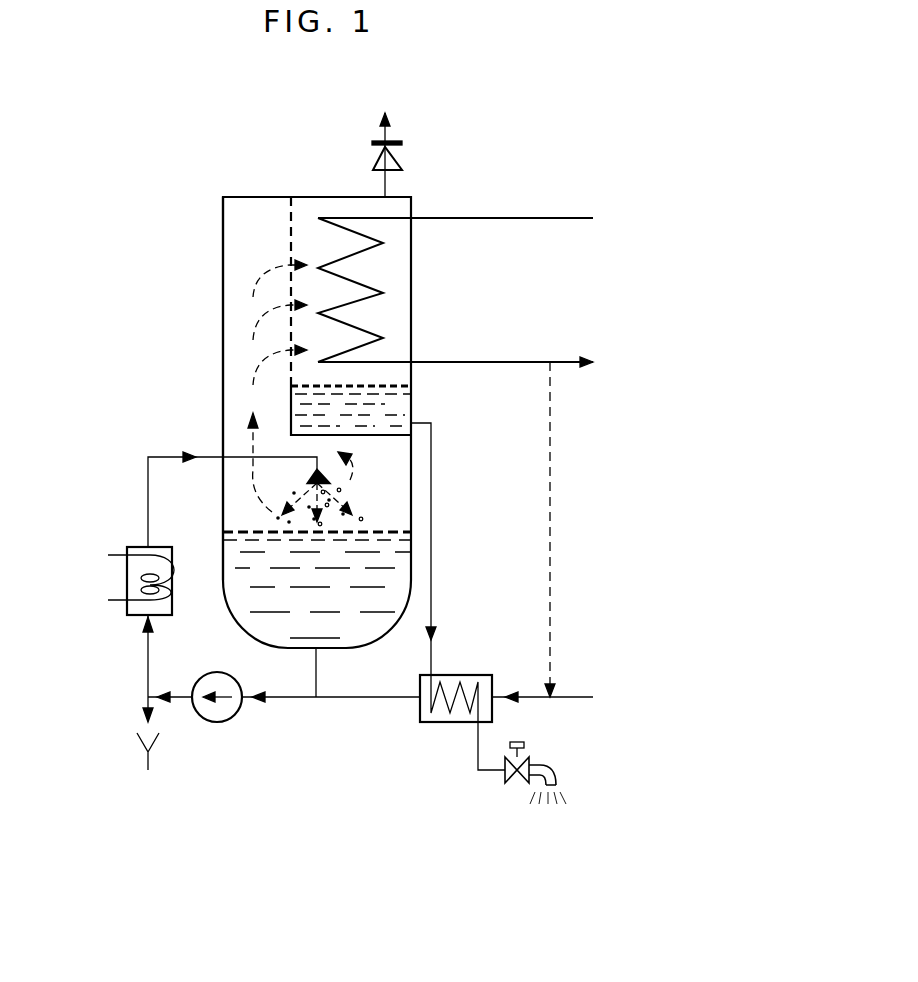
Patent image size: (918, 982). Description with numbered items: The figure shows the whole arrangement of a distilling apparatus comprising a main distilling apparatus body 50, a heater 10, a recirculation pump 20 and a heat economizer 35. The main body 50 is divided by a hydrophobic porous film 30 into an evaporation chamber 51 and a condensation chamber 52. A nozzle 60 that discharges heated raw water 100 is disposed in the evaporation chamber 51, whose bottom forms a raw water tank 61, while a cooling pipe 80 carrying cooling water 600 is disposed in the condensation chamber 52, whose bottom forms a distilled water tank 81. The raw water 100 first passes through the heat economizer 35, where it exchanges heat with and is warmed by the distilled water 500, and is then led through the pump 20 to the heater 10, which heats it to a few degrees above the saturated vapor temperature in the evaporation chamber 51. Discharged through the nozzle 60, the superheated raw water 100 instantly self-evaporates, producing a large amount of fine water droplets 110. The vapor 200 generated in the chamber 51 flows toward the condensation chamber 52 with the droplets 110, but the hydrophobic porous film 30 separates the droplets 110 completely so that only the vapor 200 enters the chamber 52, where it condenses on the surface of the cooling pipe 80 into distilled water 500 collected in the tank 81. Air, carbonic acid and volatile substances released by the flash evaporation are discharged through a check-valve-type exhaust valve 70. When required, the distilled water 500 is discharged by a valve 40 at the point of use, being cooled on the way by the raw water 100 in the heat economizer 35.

The heater 10 is at (112, 583).
The recirculation pump 20 is at (222, 712).
The hydrophobic porous film 30 is at (290, 210).
The heat economizer 35 is at (432, 722).
The valve 40 is at (508, 785).
The main distilling apparatus body 50 is at (411, 197).
The evaporation chamber 51 is at (240, 318).
The condensation chamber 52 is at (318, 200).
The nozzle 60 is at (308, 480).
The raw water tank 61 is at (373, 630).
The exhaust valve 70 is at (375, 162).
The cooling pipe 80 is at (383, 293).
The distilled water tank 81 is at (400, 404).
The raw water 100 is at (160, 455).
The water droplets 110 is at (343, 495).
The vapor 200 is at (255, 278).
The distilled water 500 is at (432, 494).
The cooling water 600 is at (545, 218).